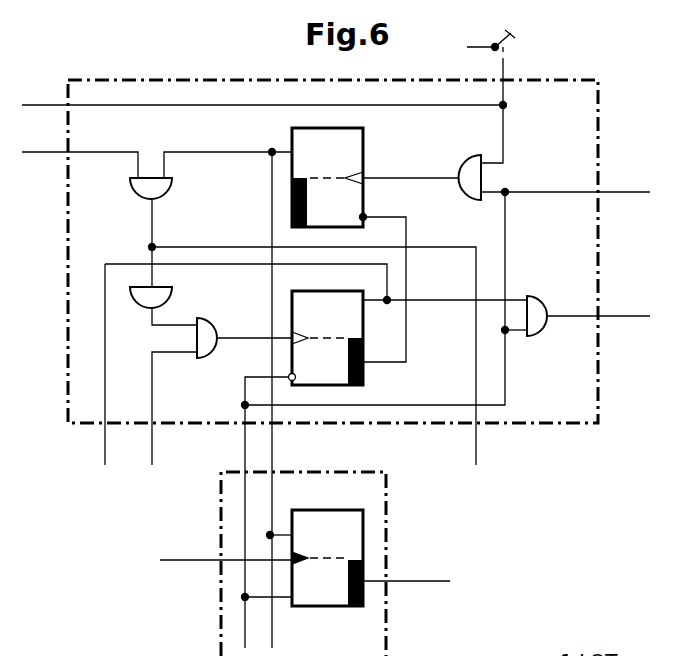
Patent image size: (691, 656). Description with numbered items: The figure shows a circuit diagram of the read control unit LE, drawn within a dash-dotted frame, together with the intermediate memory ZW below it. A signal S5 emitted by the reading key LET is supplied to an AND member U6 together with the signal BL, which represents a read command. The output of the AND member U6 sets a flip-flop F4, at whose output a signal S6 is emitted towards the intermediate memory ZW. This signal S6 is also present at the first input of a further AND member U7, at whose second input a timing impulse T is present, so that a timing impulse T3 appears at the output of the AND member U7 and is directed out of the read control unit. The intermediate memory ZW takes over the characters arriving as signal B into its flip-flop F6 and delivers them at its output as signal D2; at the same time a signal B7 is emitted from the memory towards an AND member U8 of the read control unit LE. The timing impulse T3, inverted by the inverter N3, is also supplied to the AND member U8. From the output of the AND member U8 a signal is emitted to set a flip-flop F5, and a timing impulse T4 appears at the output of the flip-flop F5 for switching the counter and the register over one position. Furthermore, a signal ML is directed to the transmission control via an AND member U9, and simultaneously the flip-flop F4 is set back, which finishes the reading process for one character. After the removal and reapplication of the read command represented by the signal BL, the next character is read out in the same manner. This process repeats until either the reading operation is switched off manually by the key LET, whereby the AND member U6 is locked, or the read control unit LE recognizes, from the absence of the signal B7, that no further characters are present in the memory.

The read control unit LE is at (241, 80).
The intermediate memory ZW is at (389, 520).
The signal S5 is at (62, 97).
The reading key LET is at (544, 55).
The timing impulse T is at (60, 145).
The AND member U7 is at (166, 183).
The timing impulse T3 is at (160, 216).
The inverter N3 is at (166, 293).
The AND member U8 is at (208, 352).
The signal S6 is at (262, 282).
The flip-flop F4 is at (375, 245).
The AND member U6 is at (470, 160).
The read command signal BL is at (640, 185).
The flip-flop F5 is at (316, 456).
The AND member U9 is at (545, 303).
The signal ML is at (646, 308).
The timing impulse T4 is at (95, 437).
The signal B7 is at (158, 437).
The flip-flop F6 is at (303, 558).
The signal B is at (212, 553).
The signal D2 is at (446, 573).